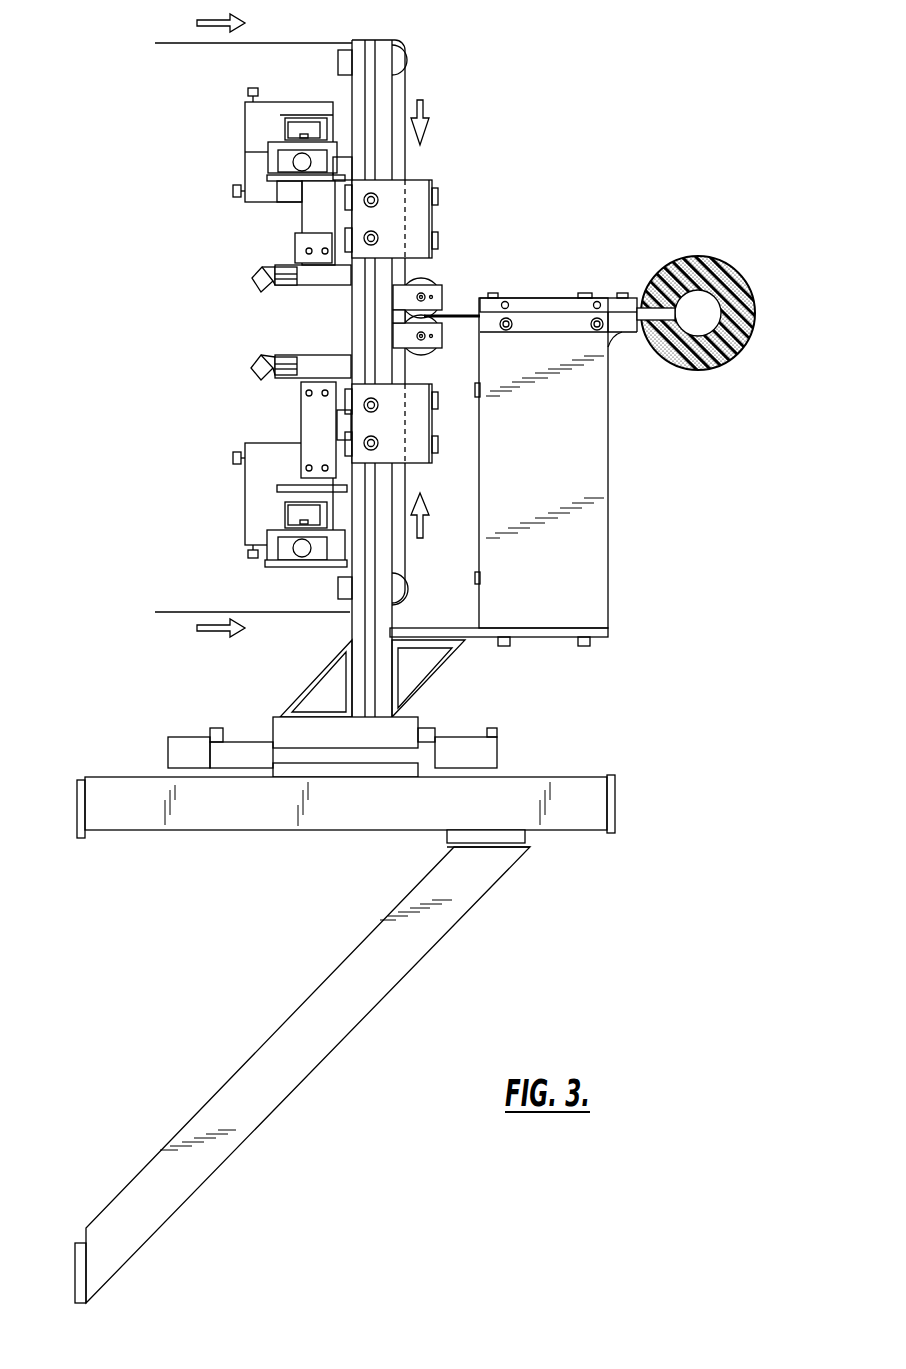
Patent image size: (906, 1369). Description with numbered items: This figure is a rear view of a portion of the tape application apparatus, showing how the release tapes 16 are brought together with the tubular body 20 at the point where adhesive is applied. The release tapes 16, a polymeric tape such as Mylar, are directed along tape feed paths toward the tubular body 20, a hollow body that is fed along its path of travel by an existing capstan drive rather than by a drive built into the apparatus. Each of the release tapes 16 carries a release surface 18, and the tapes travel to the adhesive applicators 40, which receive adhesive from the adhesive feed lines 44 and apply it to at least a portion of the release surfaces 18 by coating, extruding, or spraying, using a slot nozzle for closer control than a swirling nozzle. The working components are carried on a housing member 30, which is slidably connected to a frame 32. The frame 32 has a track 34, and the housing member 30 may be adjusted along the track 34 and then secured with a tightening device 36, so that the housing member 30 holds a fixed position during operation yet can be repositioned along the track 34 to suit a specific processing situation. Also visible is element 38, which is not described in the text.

The release tapes 16 is at (178, 40).
The release surfaces 18 is at (395, 268).
The tubular body 20 is at (722, 270).
The housing member 30 is at (540, 298).
The frame 32 is at (218, 820).
The track 34 is at (130, 772).
The tightening device 36 is at (180, 752).
The drive housing 38 is at (598, 575).
The adhesive applicators 40 is at (305, 216).
The adhesive feed lines 44 is at (256, 288).